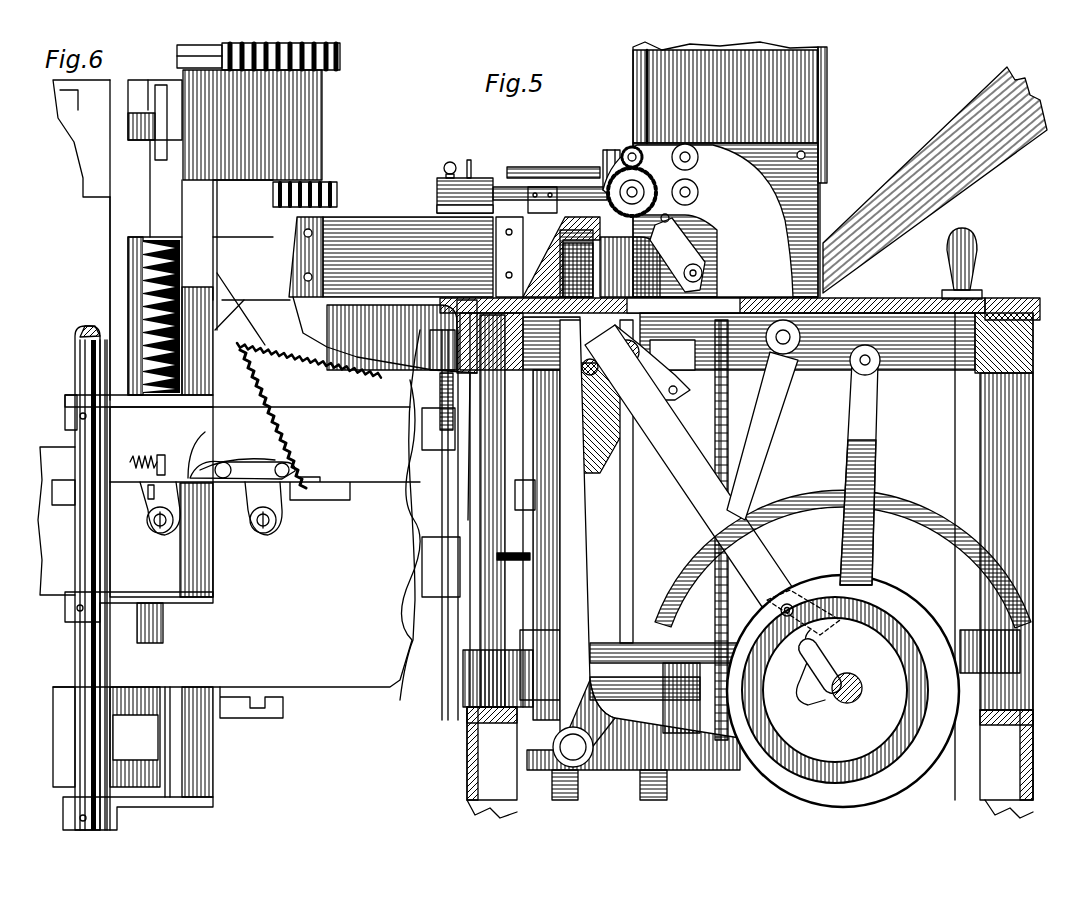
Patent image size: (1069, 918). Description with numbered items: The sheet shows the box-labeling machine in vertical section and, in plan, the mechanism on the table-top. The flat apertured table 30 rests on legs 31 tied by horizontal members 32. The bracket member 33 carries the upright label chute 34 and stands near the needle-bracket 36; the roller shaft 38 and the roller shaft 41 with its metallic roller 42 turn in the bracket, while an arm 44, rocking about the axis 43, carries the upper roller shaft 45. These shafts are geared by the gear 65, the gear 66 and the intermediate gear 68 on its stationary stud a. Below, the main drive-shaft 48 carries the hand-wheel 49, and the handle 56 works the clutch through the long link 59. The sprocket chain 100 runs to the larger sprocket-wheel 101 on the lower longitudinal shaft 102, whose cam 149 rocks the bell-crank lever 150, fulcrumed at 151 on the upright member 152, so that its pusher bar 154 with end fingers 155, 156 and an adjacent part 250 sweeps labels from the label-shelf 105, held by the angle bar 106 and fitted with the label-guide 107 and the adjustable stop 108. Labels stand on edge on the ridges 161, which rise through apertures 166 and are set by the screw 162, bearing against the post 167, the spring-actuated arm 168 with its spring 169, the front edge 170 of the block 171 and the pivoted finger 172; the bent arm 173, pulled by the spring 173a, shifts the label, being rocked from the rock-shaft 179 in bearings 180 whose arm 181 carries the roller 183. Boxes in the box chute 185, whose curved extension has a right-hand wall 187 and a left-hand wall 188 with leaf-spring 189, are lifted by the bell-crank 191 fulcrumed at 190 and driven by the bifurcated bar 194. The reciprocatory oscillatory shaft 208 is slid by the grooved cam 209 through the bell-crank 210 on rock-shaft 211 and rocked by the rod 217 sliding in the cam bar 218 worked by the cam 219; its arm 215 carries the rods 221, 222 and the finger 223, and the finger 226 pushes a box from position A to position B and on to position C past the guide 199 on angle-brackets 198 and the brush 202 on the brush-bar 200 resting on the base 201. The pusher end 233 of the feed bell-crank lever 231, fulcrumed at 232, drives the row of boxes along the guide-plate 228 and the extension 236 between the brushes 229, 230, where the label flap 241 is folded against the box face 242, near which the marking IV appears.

In FIG. 6, the base 201 is at (72, 133).
In FIG. 6, the stop or guide-plate 228 is at (180, 60).
In FIG. 6, the top widened end 233 is at (156, 95).
In FIG. 6, the brush 229 is at (338, 62).
In FIG. 6, the brush 230 is at (322, 180).
In FIG. 6, the section line IV is at (161, 200).
In FIG. 6, the edge or face of the box 242 is at (182, 182).
In FIG. 6, the protruding flap 241 is at (212, 208).
In FIG. 6, the brush-bar 200 is at (108, 252).
In FIG. 5, the brush-bar 200 is at (650, 352).
In FIG. 6, the brush 202 is at (170, 256).
In FIG. 6, the right-angle plate or guide 199 is at (217, 265).
In FIG. 6, the position C is at (235, 305).
In FIG. 6, the angle-bracket 198 is at (230, 325).
In FIG. 6, the reciprocatory oscillatory shaft 208 is at (74, 345).
In FIG. 6, the fixed arm 215 is at (64, 413).
In FIG. 5, the fixed arm 215 is at (700, 282).
In FIG. 6, the upper finger 223 is at (148, 402).
In FIG. 6, the block 171 is at (150, 458).
In FIG. 6, the single upper finger 226 is at (140, 598).
In FIG. 6, the ridges 161 is at (330, 470).
In FIG. 6, the apertures 166 is at (150, 532).
In FIG. 6, the vertical post 167 is at (242, 471).
In FIG. 6, the spring-actuated pivoted arm 168 is at (246, 460).
In FIG. 6, the front vertical edge 170 is at (190, 470).
In FIG. 6, the spring-operated finger 172 is at (200, 465).
In FIG. 6, the spring 169 is at (275, 412).
In FIG. 6, the spring 173a is at (345, 380).
In FIG. 6, the bent arm 173 is at (413, 515).
In FIG. 6, the position B is at (210, 548).
In FIG. 6, the table 30 is at (356, 602).
In FIG. 5, the table 30 is at (918, 298).
In FIG. 6, the upper rod 221 is at (88, 642).
In FIG. 6, the lower rod 222 is at (140, 672).
In FIG. 6, the left-hand wall 188 is at (60, 690).
In FIG. 6, the leaf-spring 189 is at (140, 742).
In FIG. 6, the position A is at (212, 750).
In FIG. 6, the screw 162 is at (265, 712).
In FIG. 5, the narrow extension 236 is at (402, 336).
In FIG. 5, the angle bar 106 is at (445, 206).
In FIG. 5, the label-shelf 105 is at (470, 182).
In FIG. 5, the adjustable stop 108 is at (468, 158).
In FIG. 5, the label-guide 107 is at (560, 165).
In FIG. 5, the end finger 155 is at (530, 178).
In FIG. 5, the pusher or feed bar 154 is at (575, 185).
In FIG. 5, the bracket 250 is at (548, 212).
In FIG. 5, the end finger 156 is at (606, 150).
In FIG. 5, the upright chute 34 is at (725, 169).
In FIG. 5, the arm 44 is at (705, 72).
In FIG. 5, the needle-bracket 36 is at (820, 210).
In FIG. 5, the bracket member 33 is at (698, 221).
In FIG. 5, the gear 66 is at (723, 210).
In FIG. 5, the intermediate gear 68 is at (678, 255).
In FIG. 5, the axis 43 is at (690, 145).
In FIG. 5, the roller shaft 38 is at (698, 190).
In FIG. 5, the metallic roller 42 is at (625, 205).
In FIG. 5, the stationary stud a is at (647, 184).
In FIG. 5, the upper roller shaft 45 is at (640, 130).
In FIG. 5, the gear 65 is at (642, 150).
In FIG. 5, the roller shaft 41 is at (683, 144).
In FIG. 5, the box chute 185 is at (930, 150).
In FIG. 5, the handle 56 is at (975, 262).
In FIG. 5, the legs 31 is at (470, 618).
In FIG. 5, the horizontal members 32 is at (467, 752).
In FIG. 5, the bearings 180 is at (432, 420).
In FIG. 5, the fulcrum 151 is at (530, 492).
In FIG. 5, the rock-shaft 179 is at (470, 498).
In FIG. 5, the bell-crank lever 150 is at (532, 557).
In FIG. 5, the inwardly-extended arm 181 is at (535, 588).
In FIG. 5, the roller 183 is at (500, 605).
In FIG. 5, the upright member 152 is at (535, 642).
In FIG. 5, the right-hand wall 187 is at (500, 688).
In FIG. 5, the feed bell-crank lever 231 is at (577, 537).
In FIG. 5, the bell-crank 210 is at (632, 567).
In FIG. 5, the rock-shaft 211 is at (600, 640).
In FIG. 5, the cylindrical rod 217 is at (636, 371).
In FIG. 5, the cam bar 218 is at (700, 525).
In FIG. 5, the lower longitudinal shaft 102 is at (600, 705).
In FIG. 5, the cam 149 is at (576, 792).
In FIG. 5, the fulcrum 232 is at (586, 787).
In FIG. 5, the grooved cam 209 is at (655, 800).
In FIG. 5, the hand-wheel 49 is at (793, 498).
In FIG. 5, the grooved cam 219 is at (862, 575).
In FIG. 5, the larger sprocket-wheel 101 is at (748, 686).
In FIG. 5, the main drive-shaft 48 is at (855, 698).
In FIG. 5, the link 59 is at (968, 752).
In FIG. 5, the fulcrum 190 is at (795, 360).
In FIG. 5, the bell-crank 191 is at (755, 420).
In FIG. 5, the bifurcated bar 194 is at (878, 443).
In FIG. 5, the sprocket chain 100 is at (727, 478).